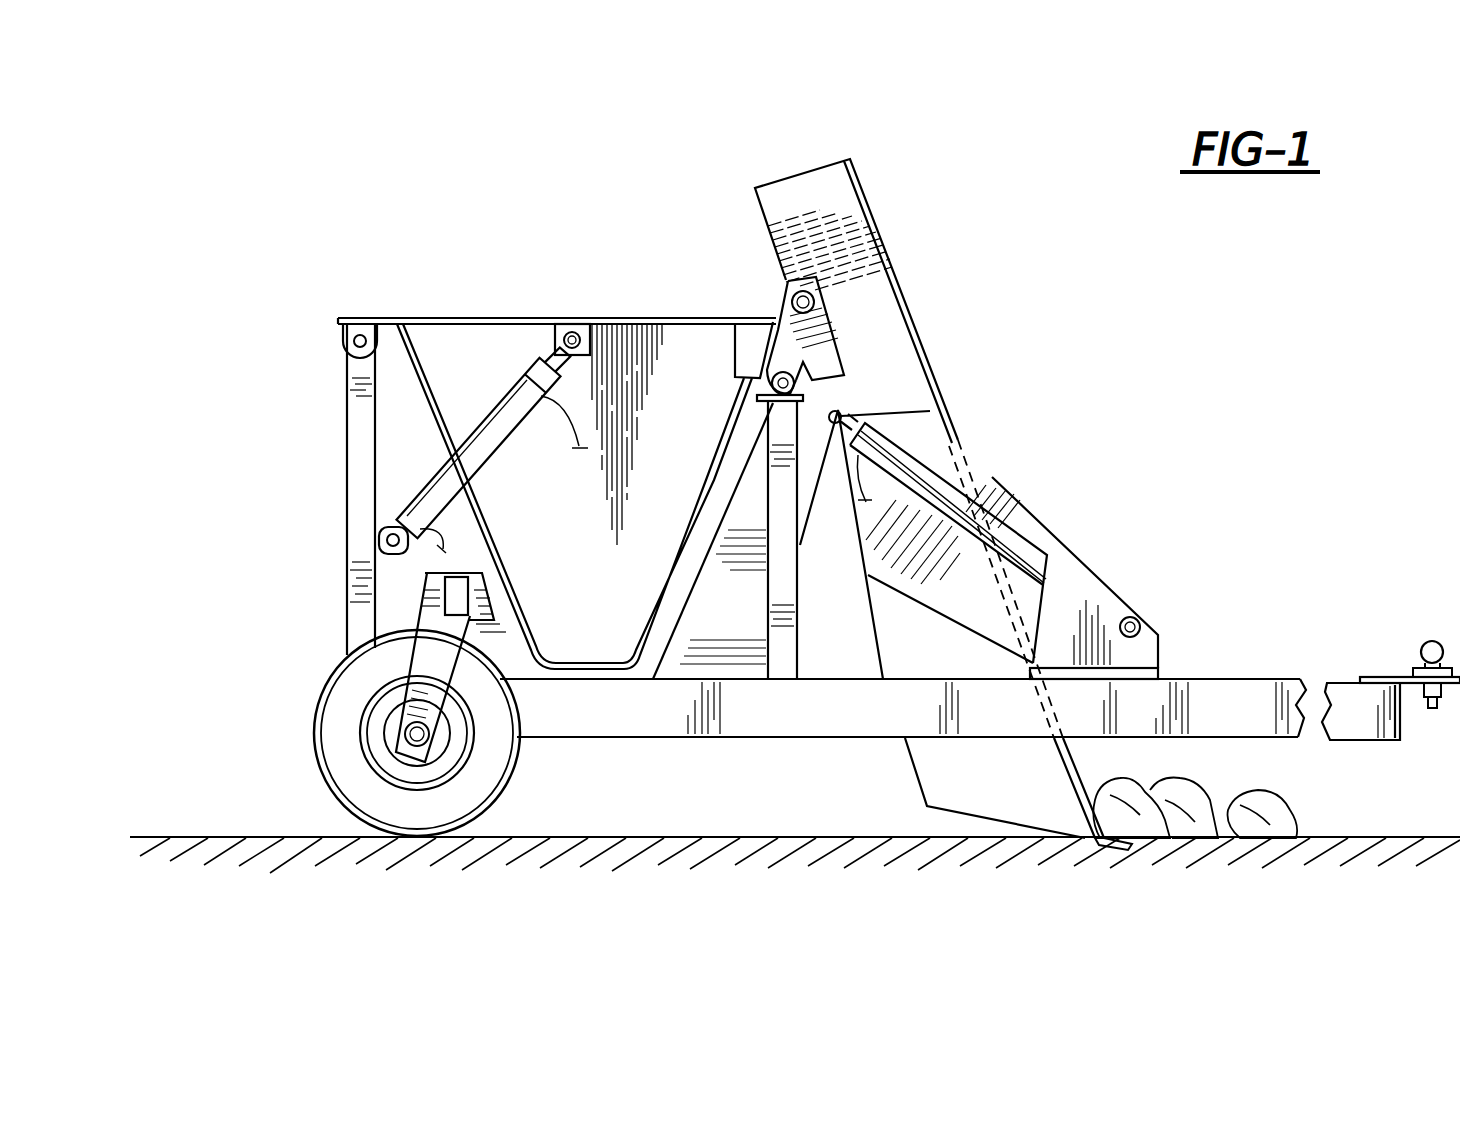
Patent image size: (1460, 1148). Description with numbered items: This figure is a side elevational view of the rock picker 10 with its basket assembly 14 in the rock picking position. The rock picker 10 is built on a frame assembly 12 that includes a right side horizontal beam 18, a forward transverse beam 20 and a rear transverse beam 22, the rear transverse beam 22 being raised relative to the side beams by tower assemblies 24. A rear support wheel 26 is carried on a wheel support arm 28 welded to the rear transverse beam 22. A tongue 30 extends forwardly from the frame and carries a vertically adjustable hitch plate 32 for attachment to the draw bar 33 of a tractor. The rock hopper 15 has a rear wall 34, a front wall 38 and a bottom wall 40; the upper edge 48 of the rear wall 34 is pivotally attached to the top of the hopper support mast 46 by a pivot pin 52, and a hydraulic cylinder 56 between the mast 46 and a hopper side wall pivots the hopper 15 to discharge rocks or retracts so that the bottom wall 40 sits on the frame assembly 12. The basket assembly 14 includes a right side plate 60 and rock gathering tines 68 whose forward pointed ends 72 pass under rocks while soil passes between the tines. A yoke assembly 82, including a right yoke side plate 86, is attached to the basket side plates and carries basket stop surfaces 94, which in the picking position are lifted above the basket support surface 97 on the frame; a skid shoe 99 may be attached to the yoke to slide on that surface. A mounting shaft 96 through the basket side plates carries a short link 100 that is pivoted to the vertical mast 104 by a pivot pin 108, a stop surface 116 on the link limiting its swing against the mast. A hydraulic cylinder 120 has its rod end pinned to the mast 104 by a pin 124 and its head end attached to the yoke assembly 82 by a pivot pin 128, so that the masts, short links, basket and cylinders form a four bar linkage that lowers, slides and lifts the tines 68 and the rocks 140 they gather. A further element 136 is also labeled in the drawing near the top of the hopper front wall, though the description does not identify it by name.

The rock picker 10 is at (1195, 325).
The frame assembly 12 is at (620, 740).
The basket assembly 14 is at (882, 212).
The rock hopper 15 is at (452, 316).
The right side horizontal beam 18 is at (810, 720).
The forward transverse beam 20 is at (1308, 740).
The rear transverse beam 22 is at (440, 585).
The tower assembly 24 is at (430, 625).
The rear support wheel 26 is at (352, 765).
The wheel support arm 28 is at (350, 668).
The tongue 30 is at (1360, 745).
The hitch plate 32 is at (1375, 677).
The draw bar 33 is at (1457, 645).
The rear wall 34 is at (420, 392).
The front wall 38 is at (636, 656).
The bottom wall 40 is at (585, 680).
The hopper support mast 46 is at (355, 488).
The upper edge 48 is at (352, 320).
The pivot pin 52 is at (355, 345).
The hydraulic cylinder 56 is at (422, 486).
The right side plate 60 is at (940, 760).
The rock gathering tine 68 is at (1103, 842).
The forward pointed end 72 is at (1130, 843).
The yoke assembly 82 is at (1040, 530).
The right yoke side plate 86 is at (1052, 540).
The basket stop surface 94 is at (1175, 688).
The mounting shaft 96 is at (805, 302).
The basket support surface 97 is at (1228, 682).
The skid shoe 99 is at (1065, 695).
The short link 100 is at (840, 352).
The vertical mast 104 is at (766, 658).
The pivot pin 108 is at (773, 377).
The stop surface 116 is at (845, 376).
The hydraulic cylinder 120 is at (1030, 470).
The pin 124 is at (838, 420).
The pivot pin 128 is at (1140, 625).
The chute plate 136 is at (722, 342).
The rocks 140 is at (1300, 840).